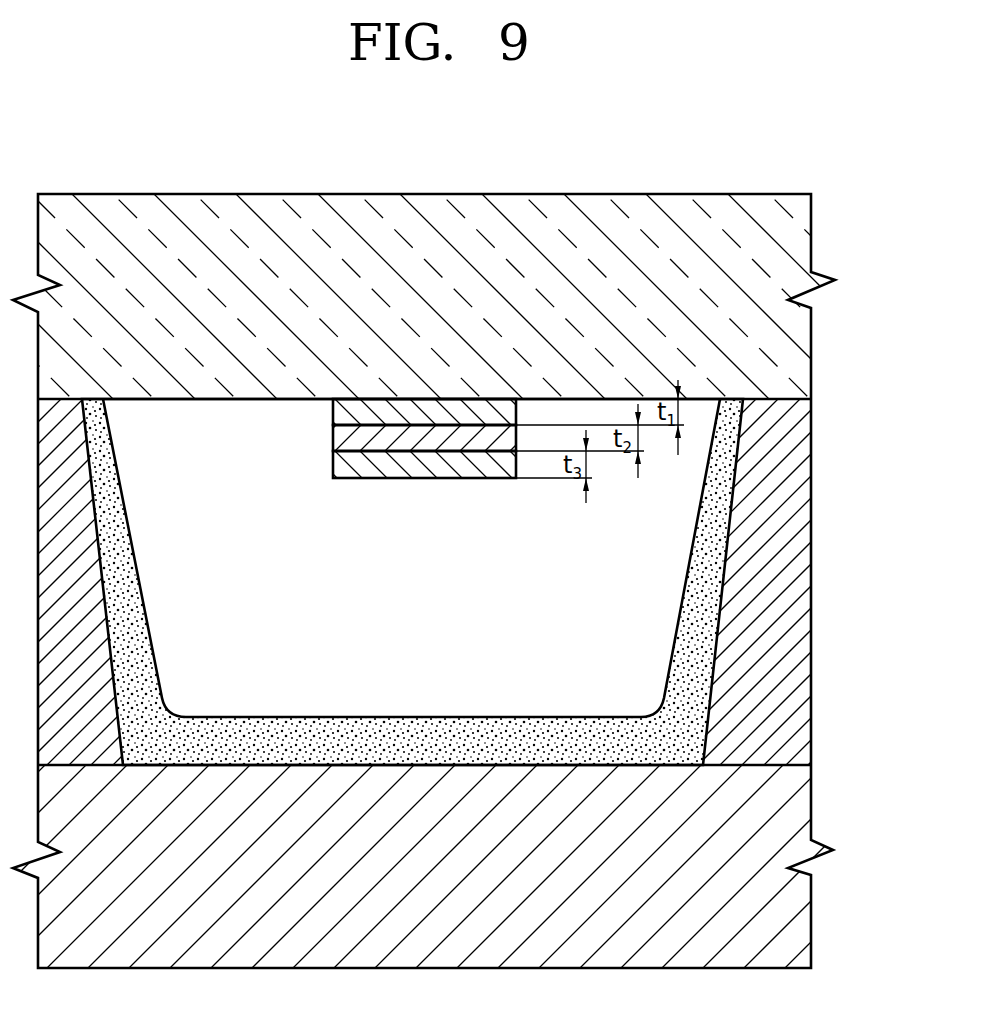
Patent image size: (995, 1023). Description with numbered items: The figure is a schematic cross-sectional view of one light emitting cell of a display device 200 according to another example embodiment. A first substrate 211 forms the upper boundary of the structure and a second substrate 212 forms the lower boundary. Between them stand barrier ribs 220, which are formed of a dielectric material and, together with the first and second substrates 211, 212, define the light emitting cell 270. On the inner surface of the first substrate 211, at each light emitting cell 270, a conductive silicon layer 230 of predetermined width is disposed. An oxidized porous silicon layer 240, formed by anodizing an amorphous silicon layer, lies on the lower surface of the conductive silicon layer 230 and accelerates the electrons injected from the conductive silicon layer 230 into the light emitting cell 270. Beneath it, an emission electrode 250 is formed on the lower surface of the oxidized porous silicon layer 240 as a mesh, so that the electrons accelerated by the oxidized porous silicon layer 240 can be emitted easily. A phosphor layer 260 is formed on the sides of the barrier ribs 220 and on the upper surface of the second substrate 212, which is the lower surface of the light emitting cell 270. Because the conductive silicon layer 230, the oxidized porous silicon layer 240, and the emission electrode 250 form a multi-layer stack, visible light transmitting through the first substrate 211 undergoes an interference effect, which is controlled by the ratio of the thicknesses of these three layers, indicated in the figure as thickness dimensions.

The display device 200 is at (122, 148).
The first substrate 211 is at (805, 353).
The second substrate 212 is at (805, 908).
The barrier ribs 220 is at (805, 570).
The conductive silicon layer 230 is at (333, 412).
The oxidized porous silicon layer 240 is at (333, 438).
The emission electrode 250 is at (333, 465).
The phosphor layer 260 is at (695, 676).
The light emitting cell 270 is at (457, 583).